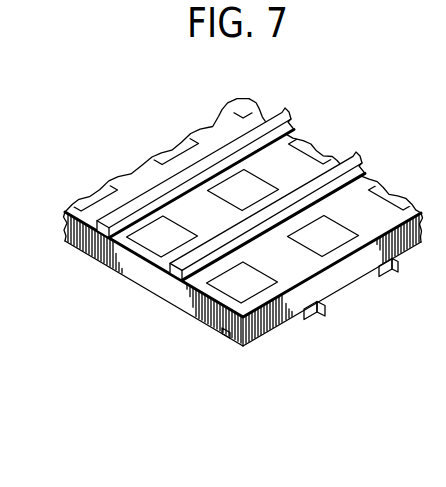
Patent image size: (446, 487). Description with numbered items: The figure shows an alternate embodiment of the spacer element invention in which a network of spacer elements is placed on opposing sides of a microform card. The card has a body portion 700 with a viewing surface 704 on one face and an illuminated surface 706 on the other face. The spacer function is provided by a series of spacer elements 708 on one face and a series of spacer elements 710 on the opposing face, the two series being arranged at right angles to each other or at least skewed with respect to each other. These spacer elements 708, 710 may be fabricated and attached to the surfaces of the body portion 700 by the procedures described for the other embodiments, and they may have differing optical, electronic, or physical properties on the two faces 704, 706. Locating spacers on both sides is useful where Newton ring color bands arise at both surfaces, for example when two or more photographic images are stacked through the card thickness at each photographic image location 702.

The body portion 700 is at (223, 335).
The photographic image location 702 is at (306, 147).
The viewing surface 704 is at (232, 120).
The illuminated surface 706 is at (138, 283).
The spacer elements 708 is at (176, 278).
The spacer elements 710 is at (310, 311).